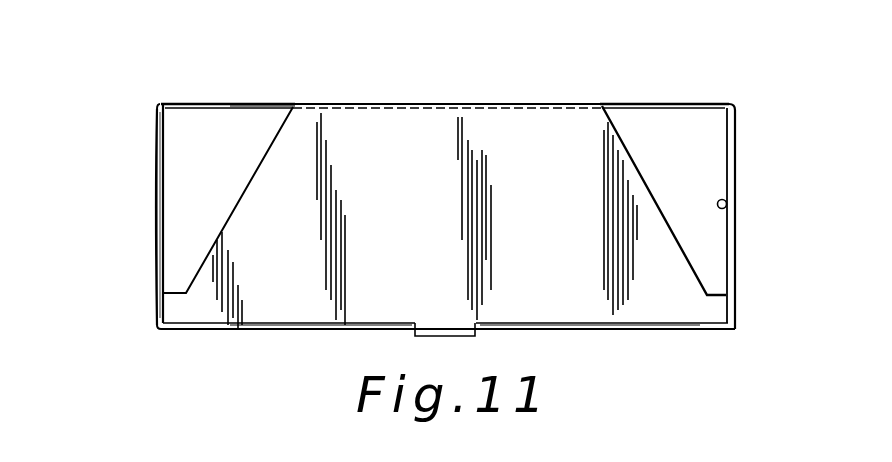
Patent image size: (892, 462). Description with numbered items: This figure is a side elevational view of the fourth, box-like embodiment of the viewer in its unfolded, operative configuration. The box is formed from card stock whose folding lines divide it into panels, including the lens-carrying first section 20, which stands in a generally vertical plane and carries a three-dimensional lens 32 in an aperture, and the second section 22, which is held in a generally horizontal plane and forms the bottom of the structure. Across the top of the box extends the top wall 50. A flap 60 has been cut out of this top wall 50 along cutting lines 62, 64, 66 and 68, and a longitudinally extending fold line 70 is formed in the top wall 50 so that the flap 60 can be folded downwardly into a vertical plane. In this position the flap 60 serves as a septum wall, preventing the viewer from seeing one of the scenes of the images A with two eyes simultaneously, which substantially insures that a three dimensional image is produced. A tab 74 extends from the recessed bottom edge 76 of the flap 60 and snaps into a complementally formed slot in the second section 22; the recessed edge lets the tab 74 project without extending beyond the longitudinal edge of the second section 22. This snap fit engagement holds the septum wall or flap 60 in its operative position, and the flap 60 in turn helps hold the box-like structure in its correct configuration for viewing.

The first section 20 is at (155, 277).
The second section 22 is at (582, 330).
The 3-D lens 32 is at (155, 215).
The top wall 50 is at (218, 103).
The flap 60 is at (415, 145).
The cutting line 62 is at (162, 101).
The cutting line 64 is at (248, 103).
The cutting line 66 is at (652, 104).
The cutting line 68 is at (708, 103).
The fold line 70 is at (521, 105).
The tab 74 is at (417, 333).
The recessed bottom edge 76 is at (288, 328).
The 3-D image A is at (733, 196).